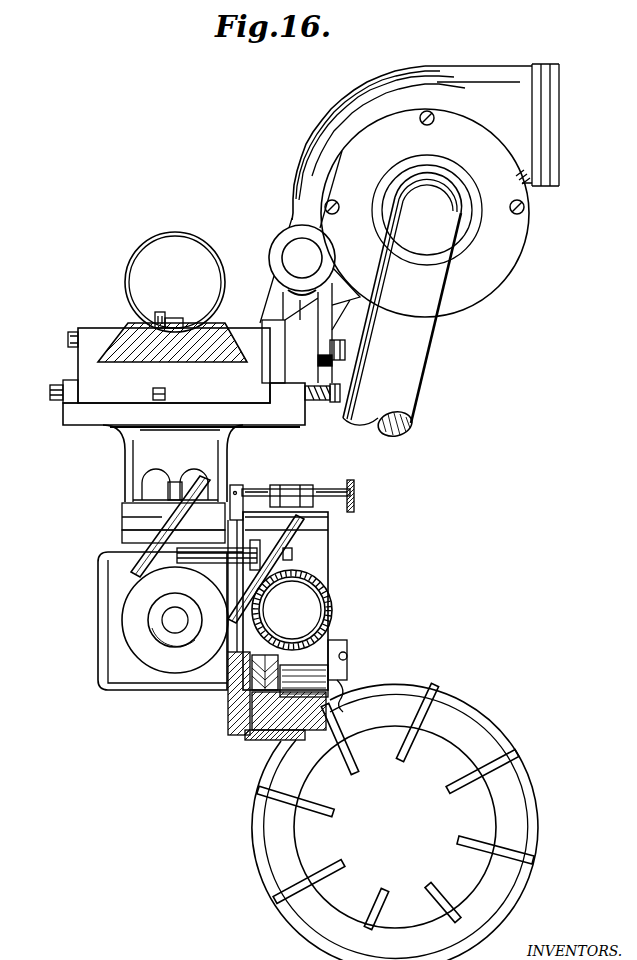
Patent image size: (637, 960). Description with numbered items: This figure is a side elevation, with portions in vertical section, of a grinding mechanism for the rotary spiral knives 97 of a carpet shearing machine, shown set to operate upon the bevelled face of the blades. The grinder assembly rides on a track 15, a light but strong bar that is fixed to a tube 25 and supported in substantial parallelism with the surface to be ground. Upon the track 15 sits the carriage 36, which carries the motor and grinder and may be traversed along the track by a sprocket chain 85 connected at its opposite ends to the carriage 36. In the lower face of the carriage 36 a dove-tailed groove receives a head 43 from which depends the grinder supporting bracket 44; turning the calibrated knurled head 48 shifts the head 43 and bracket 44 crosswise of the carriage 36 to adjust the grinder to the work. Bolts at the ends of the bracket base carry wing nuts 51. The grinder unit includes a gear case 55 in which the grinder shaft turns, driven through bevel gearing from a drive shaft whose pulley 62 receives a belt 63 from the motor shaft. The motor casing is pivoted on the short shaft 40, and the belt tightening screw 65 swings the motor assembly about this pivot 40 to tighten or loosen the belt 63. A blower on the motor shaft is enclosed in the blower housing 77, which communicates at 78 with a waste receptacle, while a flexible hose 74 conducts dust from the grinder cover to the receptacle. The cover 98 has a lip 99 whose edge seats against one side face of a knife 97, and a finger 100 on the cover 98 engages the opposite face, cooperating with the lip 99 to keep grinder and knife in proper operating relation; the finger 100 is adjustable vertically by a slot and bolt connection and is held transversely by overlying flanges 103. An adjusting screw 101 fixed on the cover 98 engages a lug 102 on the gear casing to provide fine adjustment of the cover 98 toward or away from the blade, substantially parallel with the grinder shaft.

The track 15 is at (220, 333).
The tube 25 is at (176, 233).
The carriage 36 is at (88, 368).
The shaft 40 is at (296, 250).
The head 43 is at (83, 418).
The grinder supporting bracket 44 is at (125, 466).
The calibrated knurled head 48 is at (326, 404).
The wing nut 51 is at (157, 474).
The gear case 55 is at (119, 676).
The pulley 62 is at (183, 667).
The belt 63 is at (122, 548).
The belt tightening screw 65 is at (298, 357).
The flexible hose 74 is at (413, 377).
The blower housing 77 is at (493, 283).
The blower housing outlet 78 is at (557, 112).
The sprocket chain 85 is at (153, 312).
The knives 97 is at (358, 758).
The cover 98 is at (322, 557).
The lip 99 is at (283, 741).
The finger 100 is at (347, 672).
The adjusting screw 101 is at (355, 502).
The lug 102 is at (237, 490).
The overlying flanges 103 is at (336, 645).